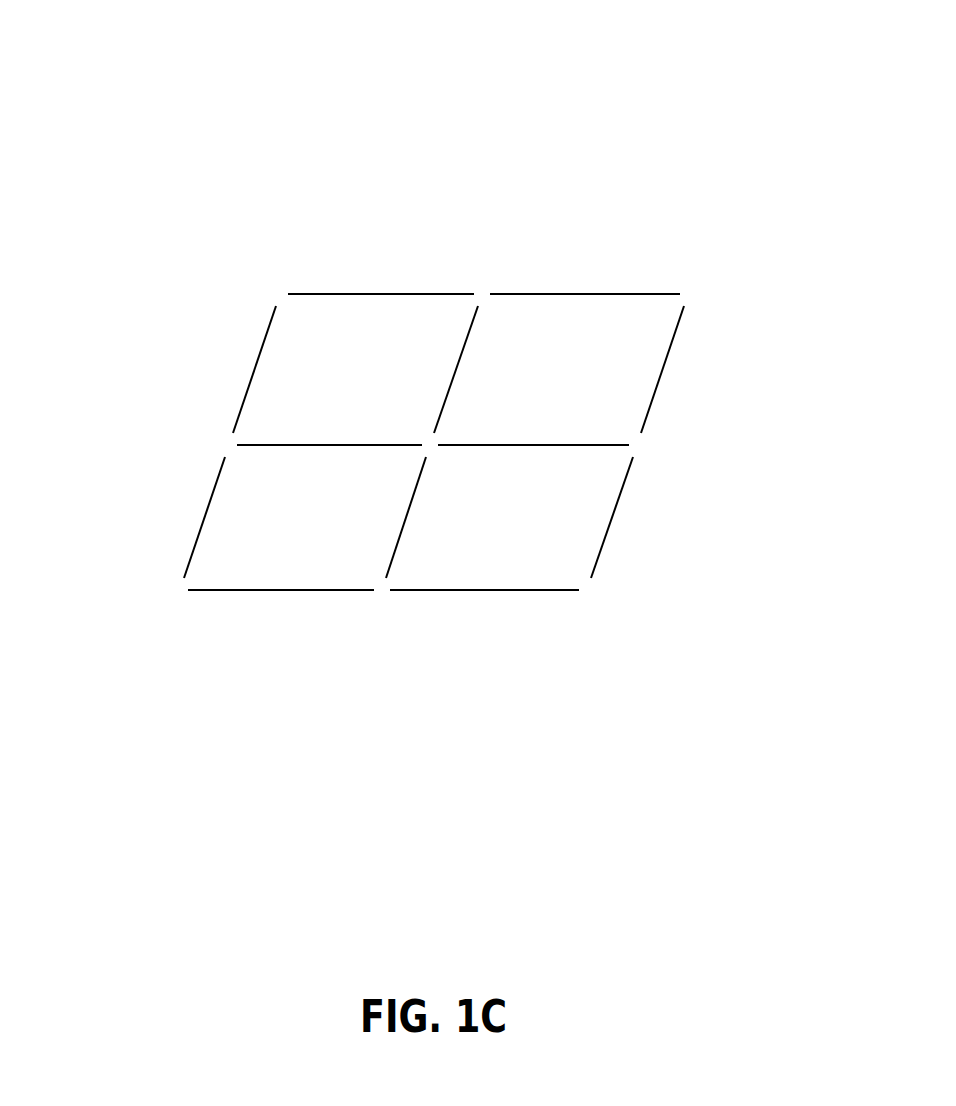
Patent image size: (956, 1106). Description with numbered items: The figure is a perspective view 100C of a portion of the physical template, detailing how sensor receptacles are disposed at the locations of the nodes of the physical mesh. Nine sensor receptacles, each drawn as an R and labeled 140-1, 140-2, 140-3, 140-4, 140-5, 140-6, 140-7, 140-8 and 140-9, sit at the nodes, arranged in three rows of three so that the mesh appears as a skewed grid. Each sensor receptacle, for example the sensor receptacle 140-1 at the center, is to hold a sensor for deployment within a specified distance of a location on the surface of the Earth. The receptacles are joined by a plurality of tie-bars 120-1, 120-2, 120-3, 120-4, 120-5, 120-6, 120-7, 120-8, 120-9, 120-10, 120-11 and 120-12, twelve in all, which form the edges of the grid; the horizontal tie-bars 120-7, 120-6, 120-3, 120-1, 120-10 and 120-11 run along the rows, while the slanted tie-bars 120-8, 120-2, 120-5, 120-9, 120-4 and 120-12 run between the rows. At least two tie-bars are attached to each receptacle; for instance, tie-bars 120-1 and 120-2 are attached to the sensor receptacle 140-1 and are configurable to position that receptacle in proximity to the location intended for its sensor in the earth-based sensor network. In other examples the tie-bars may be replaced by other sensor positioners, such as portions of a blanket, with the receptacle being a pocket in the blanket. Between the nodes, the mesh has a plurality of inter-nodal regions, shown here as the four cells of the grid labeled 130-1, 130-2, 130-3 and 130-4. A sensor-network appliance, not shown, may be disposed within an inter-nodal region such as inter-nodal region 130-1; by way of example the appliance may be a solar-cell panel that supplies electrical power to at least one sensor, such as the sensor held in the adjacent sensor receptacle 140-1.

The network topology 100C is at (153, 85).
The tie-bar 120-1 is at (525, 443).
The tie-bar 120-2 is at (450, 387).
The tie-bar 120-3 is at (330, 443).
The tie-bar 120-4 is at (402, 530).
The tie-bar 120-5 is at (663, 373).
The tie-bar 120-6 is at (577, 293).
The tie-bar 120-7 is at (378, 293).
The tie-bar 120-8 is at (262, 343).
The tie-bar 120-9 is at (198, 537).
The tie-bar 120-10 is at (278, 592).
The tie-bar 120-11 is at (475, 592).
The tie-bar 120-12 is at (610, 525).
The inter-nodal region 130-1 is at (662, 328).
The inter-nodal region 130-2 is at (453, 328).
The inter-nodal region 130-3 is at (396, 483).
The inter-nodal region 130-4 is at (605, 483).
The sensor receptacle 140-1 is at (427, 432).
The sensor receptacle 140-2 is at (643, 432).
The sensor receptacle 140-3 is at (691, 283).
The sensor receptacle 140-4 is at (478, 280).
The sensor receptacle 140-5 is at (278, 282).
The sensor receptacle 140-6 is at (227, 432).
The sensor receptacle 140-7 is at (178, 603).
The sensor receptacle 140-8 is at (378, 603).
The sensor receptacle 140-9 is at (589, 603).